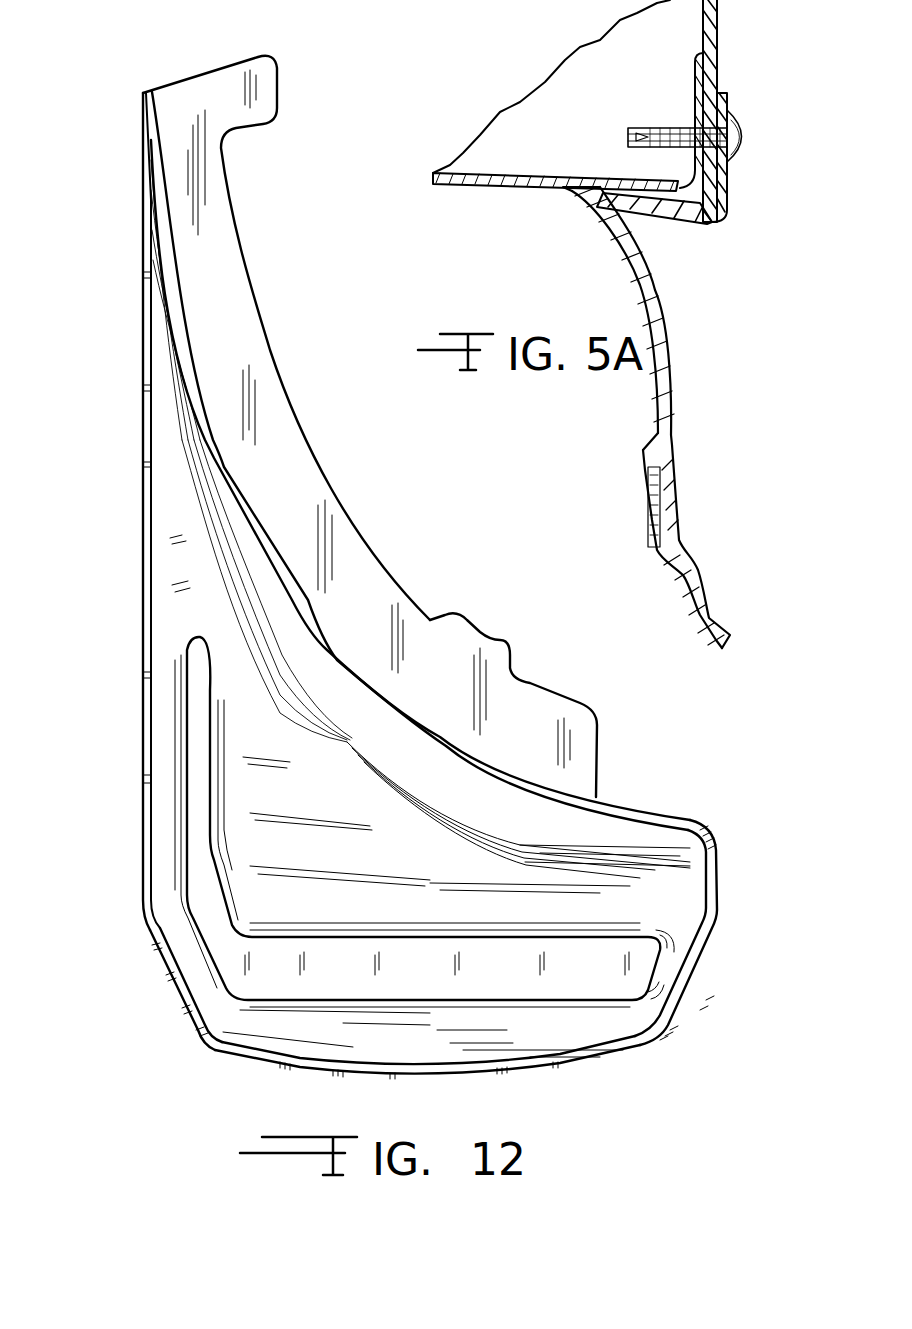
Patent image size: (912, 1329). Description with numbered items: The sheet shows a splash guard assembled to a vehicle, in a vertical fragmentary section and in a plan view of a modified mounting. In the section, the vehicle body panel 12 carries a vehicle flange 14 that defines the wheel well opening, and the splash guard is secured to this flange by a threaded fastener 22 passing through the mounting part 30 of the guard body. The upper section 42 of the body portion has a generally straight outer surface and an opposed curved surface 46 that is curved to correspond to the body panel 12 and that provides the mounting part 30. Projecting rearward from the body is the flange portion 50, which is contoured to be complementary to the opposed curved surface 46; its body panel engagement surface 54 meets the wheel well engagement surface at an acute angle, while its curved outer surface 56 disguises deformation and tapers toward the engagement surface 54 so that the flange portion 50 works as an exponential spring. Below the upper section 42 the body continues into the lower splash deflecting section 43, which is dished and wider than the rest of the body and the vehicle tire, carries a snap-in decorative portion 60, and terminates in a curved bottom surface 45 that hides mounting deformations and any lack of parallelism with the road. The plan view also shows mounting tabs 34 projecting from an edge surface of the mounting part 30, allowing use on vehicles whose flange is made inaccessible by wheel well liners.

In FIG. 5A, the vehicle body panel 12 is at (498, 188).
In FIG. 5A, the vehicle flange 14 is at (705, 50).
In FIG. 5A, the threaded fastener 22 is at (740, 137).
In FIG. 5A, the mounting part 30 is at (720, 183).
In FIG. 12, the mounting part 30 is at (303, 478).
In FIG. 12, the mounting tabs 34 is at (263, 90).
In FIG. 5A, the upper section 42 is at (687, 273).
In FIG. 12, the upper section 42 is at (186, 512).
In FIG. 5A, the lower splash deflecting section 43 is at (683, 500).
In FIG. 12, the lower splash deflecting section 43 is at (136, 897).
In FIG. 12, the curved bottom surface 45 is at (205, 1043).
In FIG. 5A, the opposed curved surface 46 is at (655, 207).
In FIG. 5A, the flange portion 50 is at (602, 232).
In FIG. 12, the flange portion 50 is at (548, 828).
In FIG. 5A, the body panel engagement surface 54 is at (683, 172).
In FIG. 5A, the outer surface 56 is at (572, 193).
In FIG. 12, the snap-in decorative portion 60 is at (624, 964).